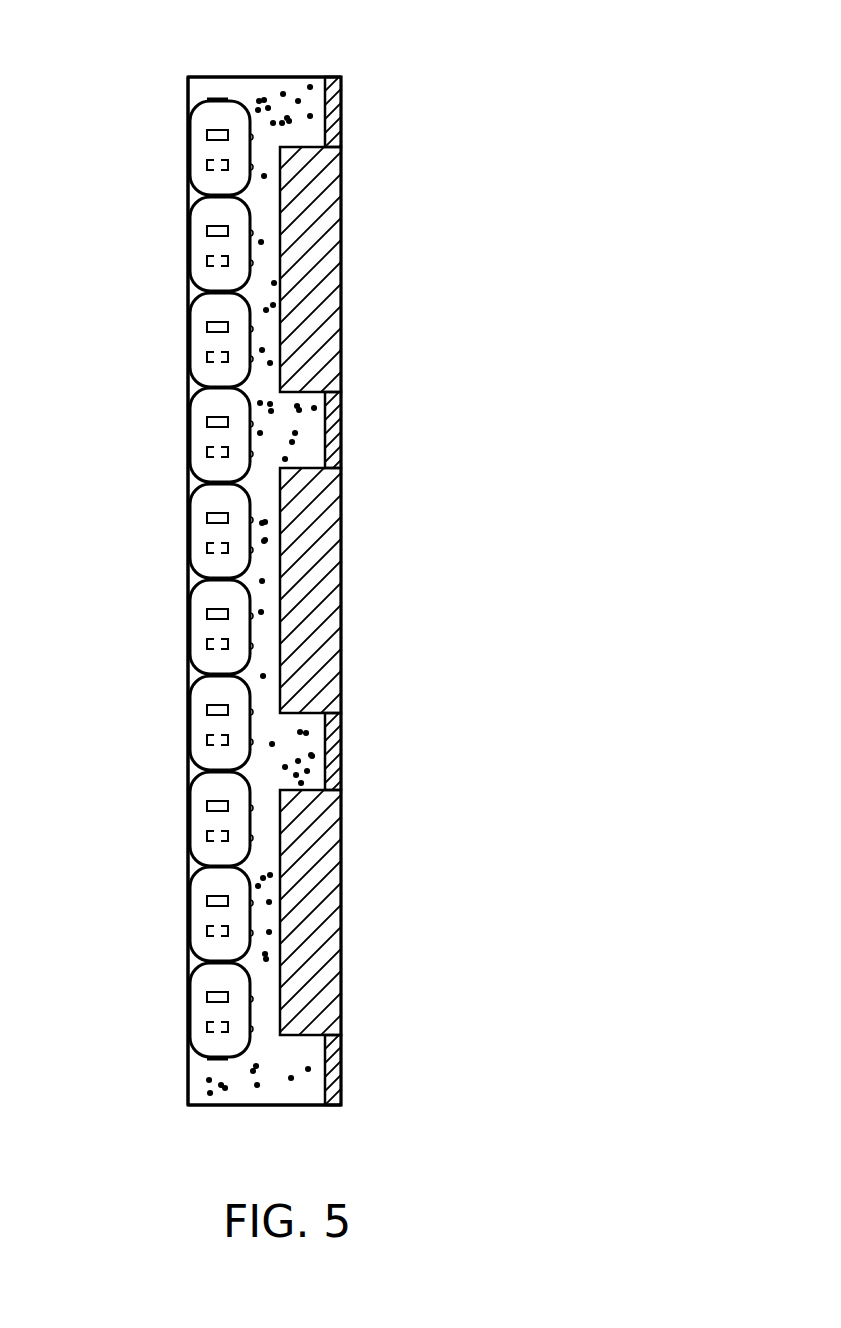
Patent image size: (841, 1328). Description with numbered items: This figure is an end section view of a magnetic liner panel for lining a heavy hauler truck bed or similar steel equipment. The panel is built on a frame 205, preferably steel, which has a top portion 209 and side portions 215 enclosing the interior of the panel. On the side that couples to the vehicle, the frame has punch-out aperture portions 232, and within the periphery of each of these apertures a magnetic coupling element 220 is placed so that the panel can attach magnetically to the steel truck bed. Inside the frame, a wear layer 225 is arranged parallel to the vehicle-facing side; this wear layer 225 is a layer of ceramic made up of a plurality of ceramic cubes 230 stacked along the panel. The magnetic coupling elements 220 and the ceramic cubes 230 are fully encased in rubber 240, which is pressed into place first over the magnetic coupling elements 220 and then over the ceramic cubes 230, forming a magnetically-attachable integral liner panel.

The top portion 209 is at (152, 668).
The side portions 215 is at (215, 78).
The wear layer 225 is at (190, 391).
The frame 205 is at (342, 112).
The magnetic coupling element 220 is at (342, 190).
The punch-out aperture portions 232 is at (398, 262).
The ceramic cubes 230 is at (197, 213).
The rubber 240 is at (266, 334).